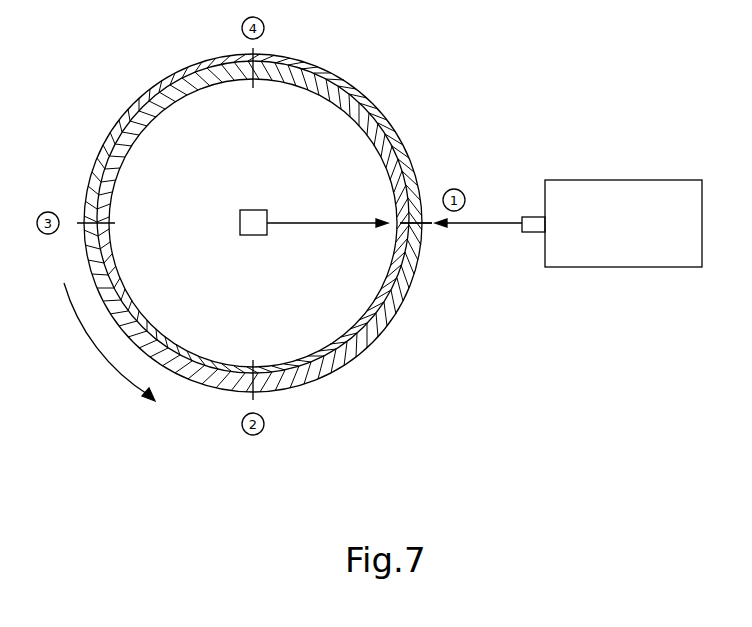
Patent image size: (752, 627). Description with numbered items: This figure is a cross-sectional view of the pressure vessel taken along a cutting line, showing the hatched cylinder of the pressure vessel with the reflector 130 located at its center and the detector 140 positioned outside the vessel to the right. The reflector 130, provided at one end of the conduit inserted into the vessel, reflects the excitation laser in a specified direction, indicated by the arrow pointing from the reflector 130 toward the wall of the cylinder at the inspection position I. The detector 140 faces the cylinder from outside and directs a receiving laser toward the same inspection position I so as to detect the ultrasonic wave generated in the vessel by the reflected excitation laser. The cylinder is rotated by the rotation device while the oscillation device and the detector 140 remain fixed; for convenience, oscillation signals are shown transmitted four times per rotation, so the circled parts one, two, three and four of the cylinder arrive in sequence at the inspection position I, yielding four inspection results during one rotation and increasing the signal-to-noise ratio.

The reflector 130 is at (253, 209).
The detector 140 is at (626, 189).
The inspection position I is at (426, 227).